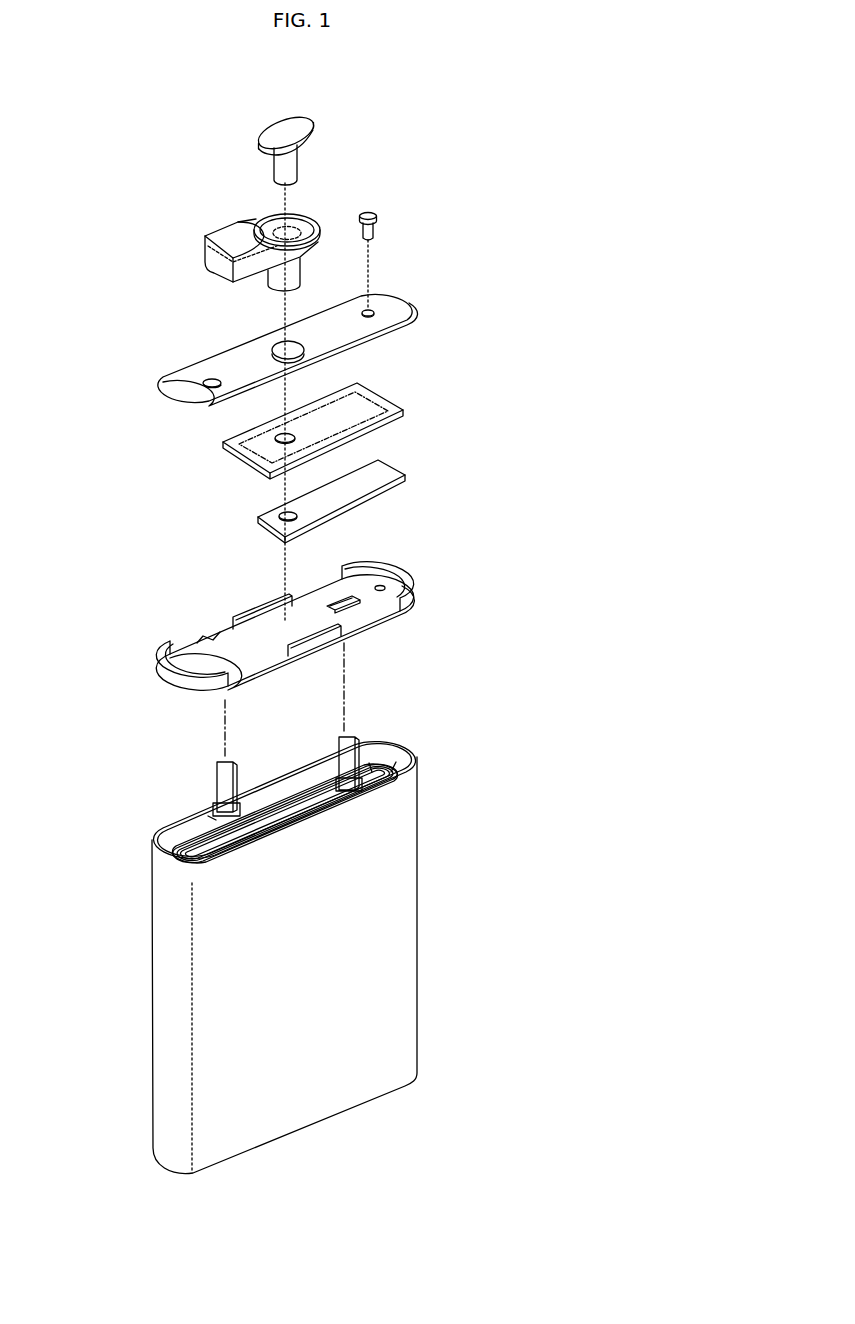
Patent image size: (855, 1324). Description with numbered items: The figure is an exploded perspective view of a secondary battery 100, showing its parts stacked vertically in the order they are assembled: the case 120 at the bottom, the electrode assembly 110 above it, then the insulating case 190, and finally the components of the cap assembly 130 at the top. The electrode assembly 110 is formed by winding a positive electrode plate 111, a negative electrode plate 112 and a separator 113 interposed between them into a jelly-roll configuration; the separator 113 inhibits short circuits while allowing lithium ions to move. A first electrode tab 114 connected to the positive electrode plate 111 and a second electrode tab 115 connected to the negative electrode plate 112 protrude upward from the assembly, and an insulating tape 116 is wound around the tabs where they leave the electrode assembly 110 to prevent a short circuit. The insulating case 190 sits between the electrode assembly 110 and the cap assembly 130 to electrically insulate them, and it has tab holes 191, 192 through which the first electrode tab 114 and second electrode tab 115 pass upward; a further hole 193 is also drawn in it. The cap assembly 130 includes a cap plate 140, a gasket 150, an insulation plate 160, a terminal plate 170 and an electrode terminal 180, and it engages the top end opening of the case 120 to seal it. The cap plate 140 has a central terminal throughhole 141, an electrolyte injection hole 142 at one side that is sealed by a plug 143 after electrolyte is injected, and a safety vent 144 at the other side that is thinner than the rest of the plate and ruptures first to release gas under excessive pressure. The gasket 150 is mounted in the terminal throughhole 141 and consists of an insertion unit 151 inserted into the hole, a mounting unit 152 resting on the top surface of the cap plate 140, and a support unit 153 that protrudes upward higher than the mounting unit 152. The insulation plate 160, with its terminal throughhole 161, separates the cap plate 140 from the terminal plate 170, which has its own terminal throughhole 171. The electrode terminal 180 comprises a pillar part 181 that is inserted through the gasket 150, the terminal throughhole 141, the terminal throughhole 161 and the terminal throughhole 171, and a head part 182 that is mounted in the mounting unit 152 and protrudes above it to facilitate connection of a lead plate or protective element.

The secondary battery 100 is at (95, 92).
The electrode assembly 110 is at (365, 690).
The positive electrode plate 111 is at (413, 757).
The negative electrode plate 112 is at (369, 763).
The separator 113 is at (396, 762).
The first electrode tab 114 is at (226, 778).
The second electrode tab 115 is at (348, 753).
The insulating tape 116 is at (208, 816).
The case 120 is at (438, 905).
The cap assembly 130 is at (487, 194).
The cap plate 140 is at (403, 300).
The terminal throughhole 141 is at (277, 348).
The electrolyte injection hole 142 is at (374, 307).
The plug 143 is at (374, 212).
The safety vent 144 is at (206, 379).
The gasket 150 is at (182, 226).
The insertion unit 151 is at (300, 268).
The mounting unit 152 is at (321, 232).
The support unit 153 is at (227, 233).
The insulation plate 160 is at (380, 393).
The terminal throughhole 161 is at (238, 447).
The terminal plate 170 is at (390, 463).
The terminal throughhole 171 is at (263, 512).
The electrode terminal 180 is at (330, 128).
The pillar part 181 is at (298, 163).
The head part 182 is at (282, 126).
The insulating case 190 is at (160, 668).
The tab hole 191 is at (337, 599).
The tab hole 192 is at (205, 636).
The electrolyte passage hole 193 is at (385, 584).